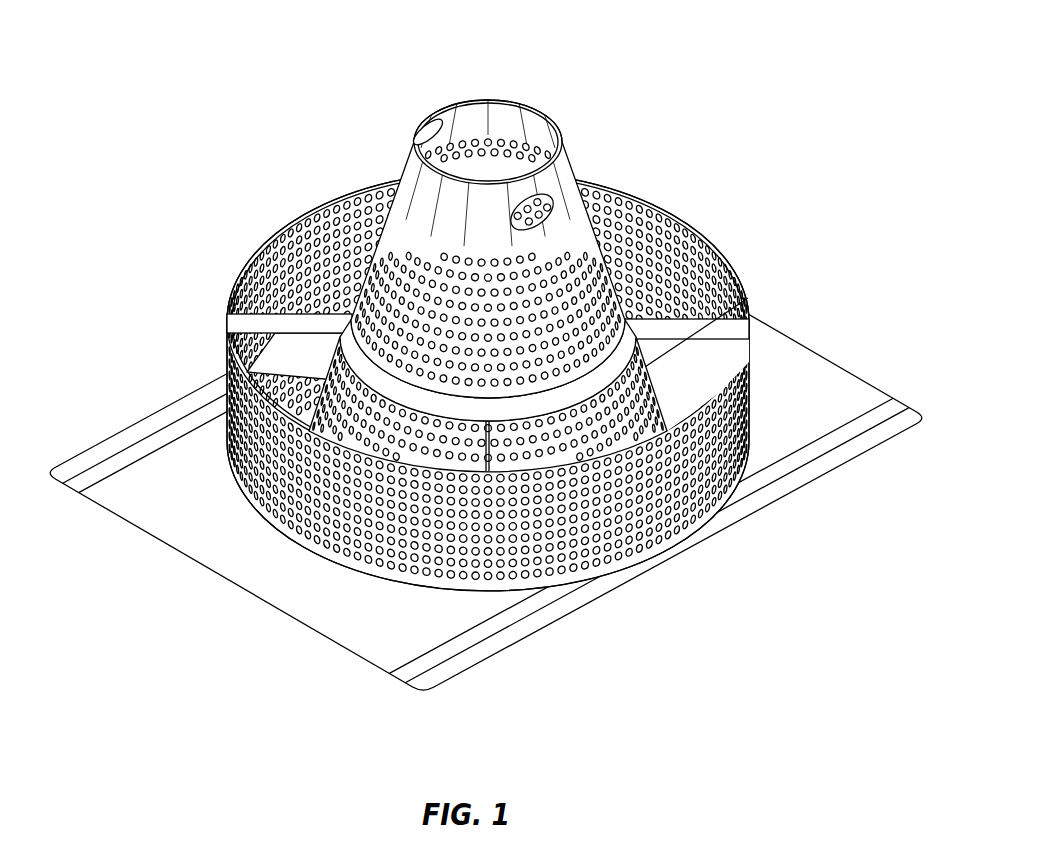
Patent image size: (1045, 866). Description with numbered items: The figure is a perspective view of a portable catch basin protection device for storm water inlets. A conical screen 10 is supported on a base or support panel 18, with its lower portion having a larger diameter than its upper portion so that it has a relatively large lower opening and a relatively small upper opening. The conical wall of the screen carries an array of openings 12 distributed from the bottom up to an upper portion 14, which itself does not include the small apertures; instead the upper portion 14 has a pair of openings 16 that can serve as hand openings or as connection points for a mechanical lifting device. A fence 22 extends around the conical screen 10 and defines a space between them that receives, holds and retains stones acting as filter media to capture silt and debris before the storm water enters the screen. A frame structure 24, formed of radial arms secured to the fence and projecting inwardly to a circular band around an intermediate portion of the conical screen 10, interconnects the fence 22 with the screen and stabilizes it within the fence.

The conical screen 10 is at (483, 359).
The openings 12 is at (748, 297).
The upper portion 14 is at (443, 200).
The openings 16 is at (530, 213).
The base or support panel 18 is at (163, 503).
The fence 22 is at (200, 356).
The frame structure 24 is at (365, 367).